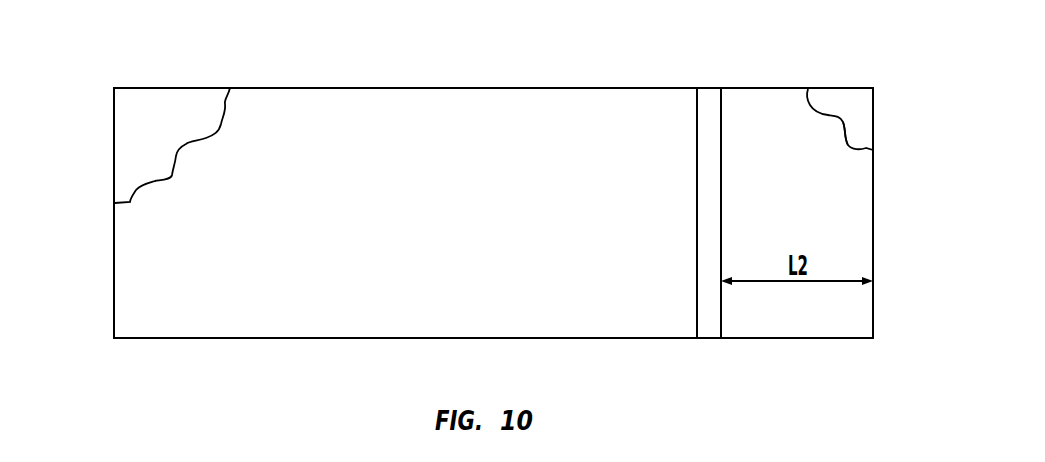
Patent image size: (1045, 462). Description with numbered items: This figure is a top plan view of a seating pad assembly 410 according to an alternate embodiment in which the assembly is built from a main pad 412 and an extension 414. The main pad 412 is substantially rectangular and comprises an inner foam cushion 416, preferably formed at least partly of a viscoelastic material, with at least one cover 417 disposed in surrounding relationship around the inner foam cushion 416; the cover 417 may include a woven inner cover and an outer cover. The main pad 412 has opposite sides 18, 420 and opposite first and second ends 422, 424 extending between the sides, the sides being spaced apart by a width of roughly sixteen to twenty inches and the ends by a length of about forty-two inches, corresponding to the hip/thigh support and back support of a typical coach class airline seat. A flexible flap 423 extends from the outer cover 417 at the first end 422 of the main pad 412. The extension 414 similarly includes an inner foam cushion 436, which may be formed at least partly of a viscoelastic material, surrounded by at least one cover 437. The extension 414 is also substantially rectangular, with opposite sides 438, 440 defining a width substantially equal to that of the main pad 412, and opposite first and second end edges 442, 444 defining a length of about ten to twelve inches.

The seating pad assembly 410 is at (542, 48).
The main pad 412 is at (347, 212).
The extension 414 is at (795, 212).
The inner foam cushion 416 is at (160, 137).
The cover 417 is at (273, 100).
The top surface 18 is at (377, 88).
The second end edge 444 is at (638, 58).
The flexible flap 423 is at (713, 108).
The side 438 is at (775, 88).
The inner foam cushion 436 is at (848, 100).
The cover 437 is at (863, 177).
The first end edge 442 is at (875, 232).
The second end 424 is at (115, 252).
The side 420 is at (218, 338).
The first end 422 is at (697, 307).
The side 440 is at (792, 338).